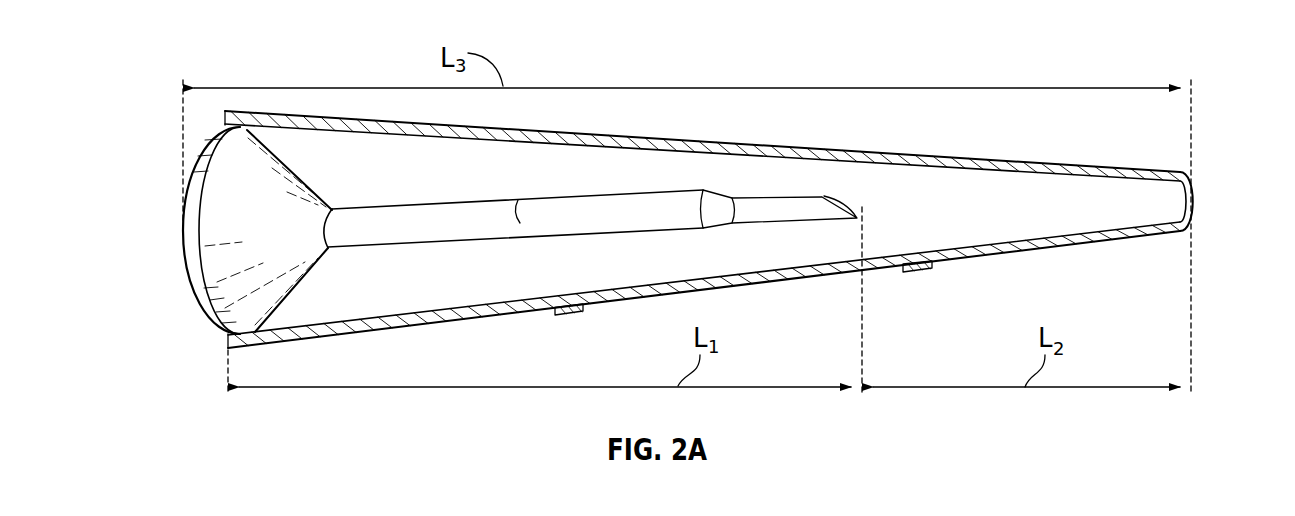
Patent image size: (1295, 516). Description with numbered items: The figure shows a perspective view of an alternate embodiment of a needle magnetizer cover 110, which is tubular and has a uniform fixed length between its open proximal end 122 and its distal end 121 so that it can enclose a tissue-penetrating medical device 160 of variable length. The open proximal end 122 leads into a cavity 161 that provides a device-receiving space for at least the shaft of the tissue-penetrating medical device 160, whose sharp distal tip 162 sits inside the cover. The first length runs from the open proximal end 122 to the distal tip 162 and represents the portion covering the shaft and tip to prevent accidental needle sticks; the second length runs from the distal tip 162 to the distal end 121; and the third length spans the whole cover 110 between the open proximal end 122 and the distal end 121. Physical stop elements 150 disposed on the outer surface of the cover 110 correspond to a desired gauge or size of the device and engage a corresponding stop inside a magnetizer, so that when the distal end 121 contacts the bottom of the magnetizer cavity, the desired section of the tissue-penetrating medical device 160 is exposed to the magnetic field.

The cover 110 is at (1212, 208).
The distal end 121 is at (1178, 226).
The open proximal end 122 is at (196, 304).
The physical stop elements 150 is at (573, 314).
The tissue-penetrating medical device 160 is at (597, 208).
The cavity 161 is at (351, 164).
The distal tip 162 is at (872, 243).